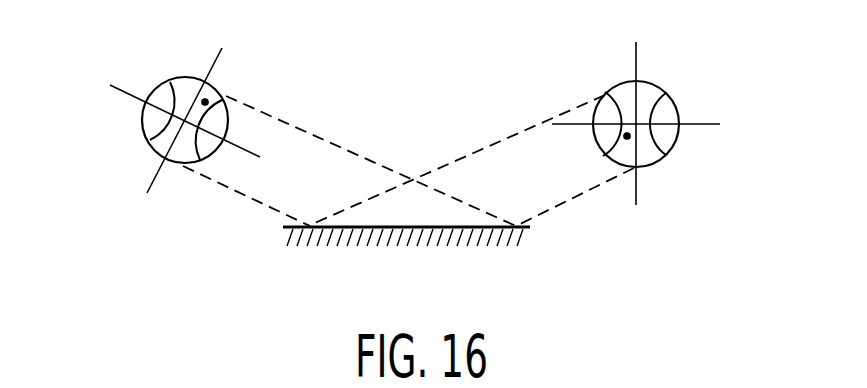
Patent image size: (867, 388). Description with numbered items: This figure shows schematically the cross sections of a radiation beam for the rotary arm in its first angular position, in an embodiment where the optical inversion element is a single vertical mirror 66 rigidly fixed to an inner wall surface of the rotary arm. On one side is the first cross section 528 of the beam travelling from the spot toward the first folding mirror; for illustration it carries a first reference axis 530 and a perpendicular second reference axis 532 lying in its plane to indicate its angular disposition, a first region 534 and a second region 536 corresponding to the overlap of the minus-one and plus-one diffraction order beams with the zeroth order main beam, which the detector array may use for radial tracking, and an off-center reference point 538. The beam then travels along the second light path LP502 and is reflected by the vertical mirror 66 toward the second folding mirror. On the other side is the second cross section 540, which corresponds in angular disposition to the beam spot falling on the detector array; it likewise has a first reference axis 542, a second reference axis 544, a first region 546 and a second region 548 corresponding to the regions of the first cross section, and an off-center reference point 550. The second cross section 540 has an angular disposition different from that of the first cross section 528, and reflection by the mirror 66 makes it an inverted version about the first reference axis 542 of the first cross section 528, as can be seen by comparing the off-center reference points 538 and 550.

The first cross section 528 is at (645, 95).
The first reference axis 530 is at (697, 125).
The second reference axis 532 is at (633, 177).
The first region 534 is at (607, 108).
The second region 536 is at (670, 113).
The off-center reference point 538 is at (631, 138).
The second cross section 540 is at (158, 142).
The first reference axis 542 is at (127, 93).
The second reference axis 544 is at (210, 70).
The first region 546 is at (148, 117).
The second region 548 is at (203, 147).
The off-center reference point 550 is at (212, 100).
The second light path LP502 is at (471, 153).
The mirror 66 is at (330, 230).